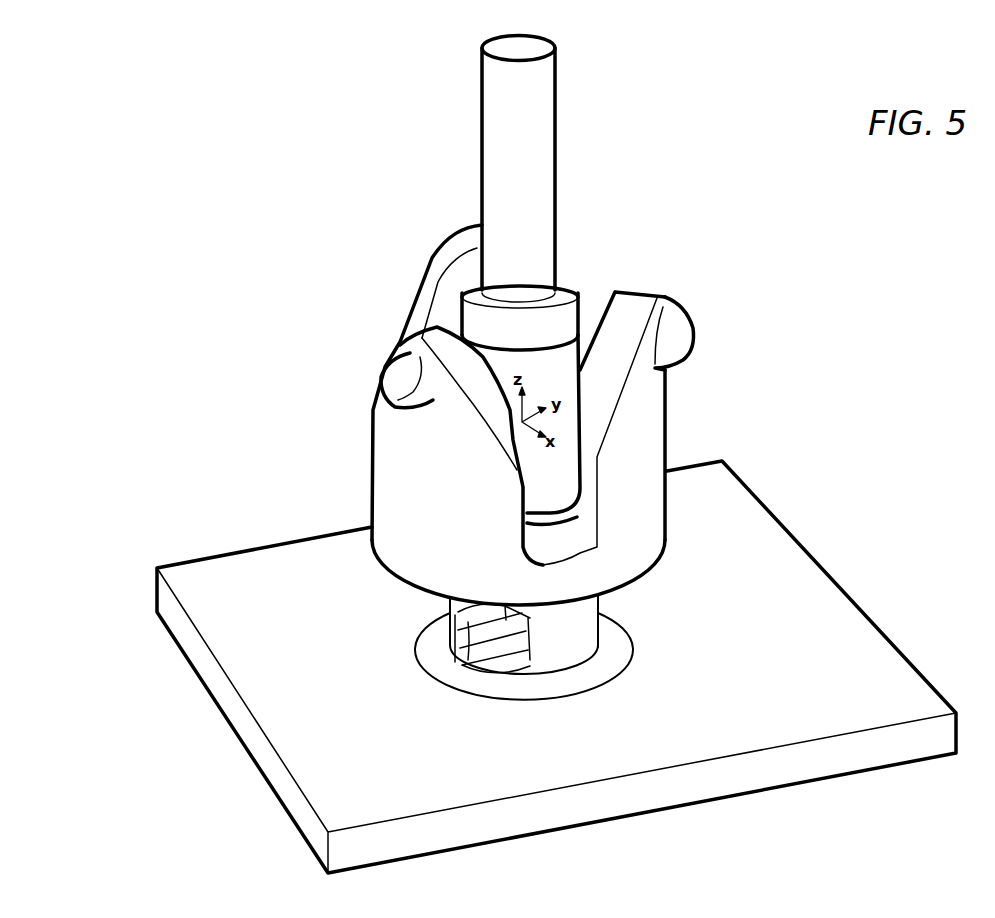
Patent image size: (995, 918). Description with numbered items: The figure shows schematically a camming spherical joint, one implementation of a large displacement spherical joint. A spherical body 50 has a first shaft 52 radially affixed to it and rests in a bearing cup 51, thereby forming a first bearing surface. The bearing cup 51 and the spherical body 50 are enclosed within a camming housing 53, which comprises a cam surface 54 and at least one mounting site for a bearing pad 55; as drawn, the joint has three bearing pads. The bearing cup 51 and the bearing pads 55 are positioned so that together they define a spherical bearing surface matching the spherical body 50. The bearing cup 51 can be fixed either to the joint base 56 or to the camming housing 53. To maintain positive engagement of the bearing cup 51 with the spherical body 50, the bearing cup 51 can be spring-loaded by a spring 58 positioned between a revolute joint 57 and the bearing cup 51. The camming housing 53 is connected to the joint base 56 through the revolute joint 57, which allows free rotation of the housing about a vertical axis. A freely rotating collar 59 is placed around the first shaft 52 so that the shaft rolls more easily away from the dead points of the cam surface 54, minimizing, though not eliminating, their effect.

The spherical body 50 is at (560, 360).
The bearing cup 51 is at (547, 520).
The first shaft 52 is at (543, 100).
The camming housing 53 is at (645, 440).
The cam surface 54 is at (423, 338).
The bearing pad 55 is at (678, 328).
The joint base 56 is at (818, 583).
The revolute joint 57 is at (572, 683).
The spring 58 is at (487, 665).
The freely rotating collar 59 is at (563, 295).